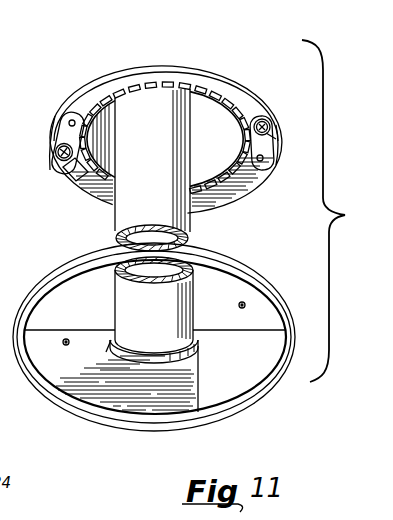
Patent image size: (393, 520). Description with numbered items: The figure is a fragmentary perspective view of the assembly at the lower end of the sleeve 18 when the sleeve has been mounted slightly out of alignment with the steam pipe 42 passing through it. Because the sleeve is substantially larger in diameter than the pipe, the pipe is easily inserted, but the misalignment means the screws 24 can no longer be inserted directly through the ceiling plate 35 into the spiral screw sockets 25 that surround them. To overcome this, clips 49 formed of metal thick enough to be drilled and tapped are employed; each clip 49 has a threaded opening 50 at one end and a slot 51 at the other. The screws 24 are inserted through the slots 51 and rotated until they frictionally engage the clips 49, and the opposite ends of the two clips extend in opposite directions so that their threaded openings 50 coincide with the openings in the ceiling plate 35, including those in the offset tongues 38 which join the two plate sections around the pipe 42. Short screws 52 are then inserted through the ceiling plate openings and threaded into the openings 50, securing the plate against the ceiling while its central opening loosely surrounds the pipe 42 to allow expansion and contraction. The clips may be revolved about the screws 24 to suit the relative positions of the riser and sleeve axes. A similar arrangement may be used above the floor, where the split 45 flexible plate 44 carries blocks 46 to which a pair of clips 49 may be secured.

The sleeve 18 is at (233, 160).
The screw 24 is at (58, 163).
The spiral screw socket 25 is at (6, 80).
The ceiling plate 35 is at (265, 393).
The tongue 38 is at (155, 350).
The steam pipe 42 is at (154, 226).
The plate 44 is at (228, 92).
The split 45 is at (173, 90).
The block 46 is at (58, 148).
The clip 49 is at (58, 156).
The threaded opening 50 is at (57, 124).
The slot 51 is at (74, 182).
The short screw 52 is at (71, 346).